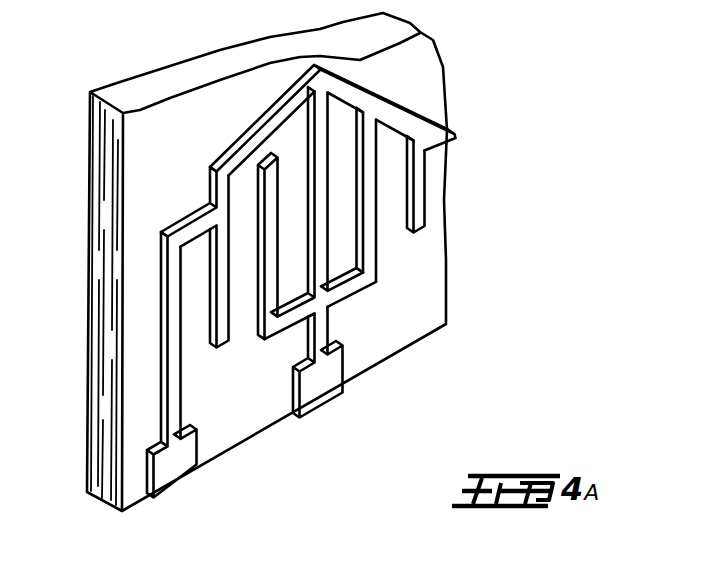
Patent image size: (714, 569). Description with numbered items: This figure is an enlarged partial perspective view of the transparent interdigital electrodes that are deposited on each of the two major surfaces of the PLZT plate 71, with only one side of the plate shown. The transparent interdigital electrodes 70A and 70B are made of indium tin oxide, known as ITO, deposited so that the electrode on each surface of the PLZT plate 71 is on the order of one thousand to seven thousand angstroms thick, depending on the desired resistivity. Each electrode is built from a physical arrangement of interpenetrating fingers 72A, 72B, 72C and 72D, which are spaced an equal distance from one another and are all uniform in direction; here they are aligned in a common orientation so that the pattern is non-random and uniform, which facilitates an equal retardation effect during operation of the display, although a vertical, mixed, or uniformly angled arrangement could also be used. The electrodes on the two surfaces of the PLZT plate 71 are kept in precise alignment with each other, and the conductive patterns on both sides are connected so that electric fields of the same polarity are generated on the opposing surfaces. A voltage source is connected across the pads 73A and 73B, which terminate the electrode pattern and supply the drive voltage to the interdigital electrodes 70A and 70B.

The PLZT plate 71 is at (133, 160).
The transparent interdigital electrode 70A is at (393, 118).
The transparent interdigital electrode 70B is at (345, 288).
The interpenetrating finger 72A is at (372, 236).
The interpenetrating finger 72B is at (270, 304).
The interpenetrating finger 72C is at (423, 192).
The interpenetrating finger 72D is at (222, 334).
The pad 73A is at (178, 455).
The pad 73B is at (336, 360).